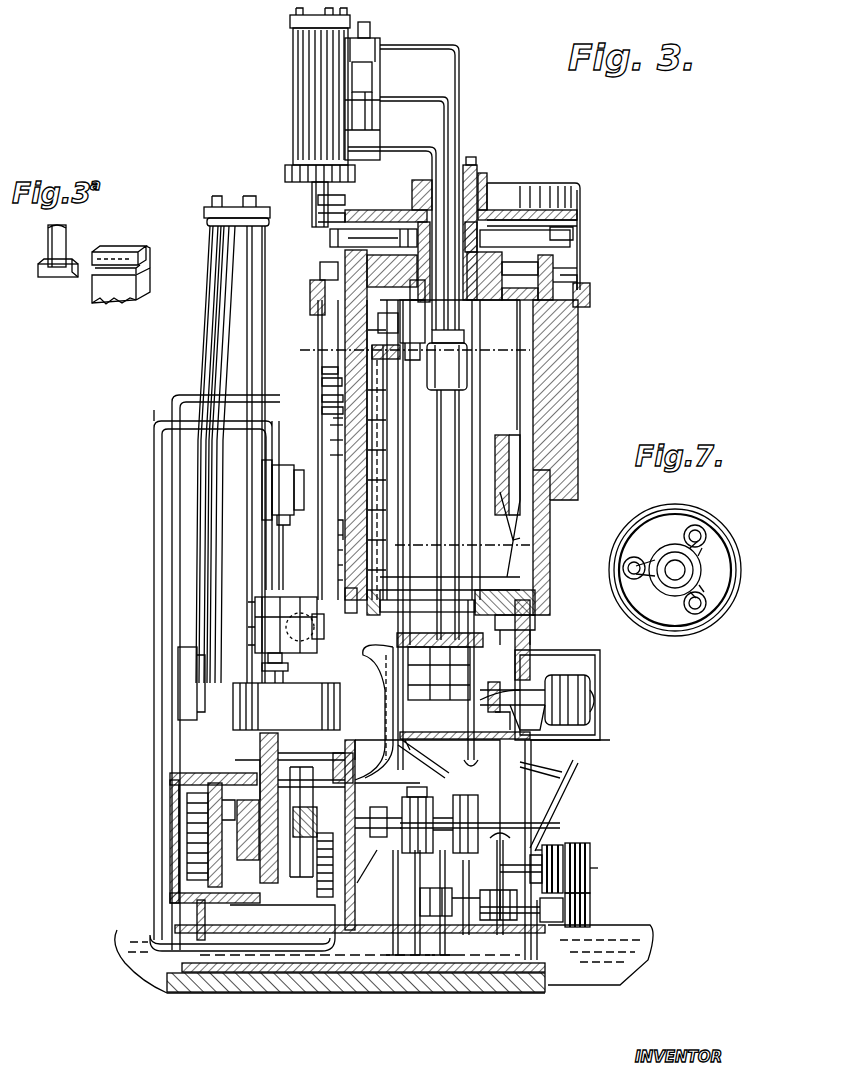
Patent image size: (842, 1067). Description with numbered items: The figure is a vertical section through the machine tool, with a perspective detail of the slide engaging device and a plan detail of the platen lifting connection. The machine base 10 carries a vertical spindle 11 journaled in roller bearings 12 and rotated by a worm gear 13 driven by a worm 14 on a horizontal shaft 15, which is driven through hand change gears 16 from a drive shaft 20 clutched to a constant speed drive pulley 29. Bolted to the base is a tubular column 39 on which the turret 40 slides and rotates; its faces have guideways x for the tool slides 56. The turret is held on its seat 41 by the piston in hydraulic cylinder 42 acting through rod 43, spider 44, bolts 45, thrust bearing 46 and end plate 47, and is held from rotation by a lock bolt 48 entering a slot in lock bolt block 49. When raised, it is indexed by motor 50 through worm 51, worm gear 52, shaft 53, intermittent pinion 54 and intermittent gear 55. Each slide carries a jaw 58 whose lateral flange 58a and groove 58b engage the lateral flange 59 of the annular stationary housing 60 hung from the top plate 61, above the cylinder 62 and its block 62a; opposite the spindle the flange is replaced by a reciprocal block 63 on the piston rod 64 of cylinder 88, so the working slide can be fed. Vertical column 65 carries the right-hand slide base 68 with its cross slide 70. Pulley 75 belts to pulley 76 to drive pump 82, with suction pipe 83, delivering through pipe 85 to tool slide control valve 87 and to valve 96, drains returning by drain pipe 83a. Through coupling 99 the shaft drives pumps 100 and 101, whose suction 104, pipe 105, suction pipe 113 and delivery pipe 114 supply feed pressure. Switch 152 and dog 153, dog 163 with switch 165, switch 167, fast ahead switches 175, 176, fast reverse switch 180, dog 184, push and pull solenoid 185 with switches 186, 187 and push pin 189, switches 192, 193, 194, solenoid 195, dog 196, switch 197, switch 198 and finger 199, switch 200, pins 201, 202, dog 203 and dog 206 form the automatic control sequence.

In FIG. 3, the machine base 10 is at (178, 918).
In FIG. 3, the vertical spindle 11 is at (268, 905).
In FIG. 3, the roller bearings 12 is at (250, 760).
In FIG. 3, the worm gear 13 is at (208, 805).
In FIG. 3, the worm 14 is at (277, 860).
In FIG. 3, the horizontal shaft 15 is at (416, 820).
In FIG. 3, the hand change gears 16 is at (187, 822).
In FIG. 3, the drive shaft 20 is at (570, 843).
In FIG. 3, the constant speed drive pulley 29 is at (590, 860).
In FIG. 3, the tubular column 39 is at (560, 362).
In FIG. 3, the turret 40 is at (560, 420).
In FIG. 3, the seat 41 is at (515, 560).
In FIG. 3, the hydraulic cylinder 42 is at (419, 706).
In FIG. 7, the rod 43 is at (670, 572).
In FIG. 3, the rod 43 is at (455, 430).
In FIG. 7, the spider 44 is at (663, 545).
In FIG. 3, the spider 44 is at (467, 368).
In FIG. 7, the bolts 45 is at (634, 557).
In FIG. 3, the bolts 45 is at (440, 395).
In FIG. 3, the thrust bearing 46 is at (575, 285).
In FIG. 3, the end plate 47 is at (518, 265).
In FIG. 3, the lock bolt 48 is at (555, 480).
In FIG. 3, the lock bolt block 49 is at (509, 460).
In FIG. 3, the motor 50 is at (590, 686).
In FIG. 3, the worm 51 is at (530, 688).
In FIG. 3, the worm gear 52 is at (511, 717).
In FIG. 3, the shaft 53 is at (540, 600).
In FIG. 3, the intermittent pinion 54 is at (530, 590).
In FIG. 3, the intermittent gear 55 is at (540, 620).
In FIG. 3, the tool slides 56 is at (578, 315).
In FIG. 3A, the jaw 58 is at (105, 296).
In FIG. 3, the jaw 58 is at (593, 280).
In FIG. 3A, the lateral flange 58a is at (110, 256).
In FIG. 3, the lateral flange 58a is at (577, 240).
In FIG. 3A, the groove 58b is at (140, 270).
In FIG. 3, the lateral flange 59 is at (568, 278).
In FIG. 3, the annular stationary housing 60 is at (562, 250).
In FIG. 3, the top plate 61 is at (578, 183).
In FIG. 3, the cylinder 62 is at (532, 208).
In FIG. 3, the cylinder block 62a is at (487, 180).
In FIG. 3A, the reciprocal block 63 is at (53, 278).
In FIG. 3, the reciprocal block 63 is at (320, 270).
In FIG. 3A, the piston rod 64 is at (48, 246).
In FIG. 3, the piston rod 64 is at (312, 240).
In FIG. 3, the vertical column 65 is at (255, 595).
In FIG. 3, the right-hand slide base 68 is at (268, 617).
In FIG. 3, the cross slide 70 is at (285, 635).
In FIG. 3, the pulley 75 is at (590, 872).
In FIG. 3, the pulley 76 is at (592, 908).
In FIG. 3, the pump 82 is at (420, 992).
In FIG. 3, the suction pipe 83 is at (388, 992).
In FIG. 3, the drain pipe 83a is at (450, 100).
In FIG. 3, the pipe 85 is at (420, 138).
In FIG. 3, the tool slide control valve 87 is at (362, 80).
In FIG. 3, the cylinder 88 is at (293, 47).
In FIG. 3, the valve 96 is at (310, 960).
In FIG. 3, the coupling 99 is at (333, 835).
In FIG. 3, the pump 100 is at (410, 870).
In FIG. 3, the pump 101 is at (498, 826).
In FIG. 3, the suction 104 is at (462, 992).
In FIG. 3, the pipe 105 is at (425, 40).
In FIG. 3, the suction pipe 113 is at (533, 992).
In FIG. 3, the delivery pipe 114 is at (172, 535).
In FIG. 3, the switch 152 is at (337, 600).
In FIG. 3, the dog 153 is at (338, 565).
In FIG. 3, the dog 163 is at (322, 408).
In FIG. 3, the switch 165 is at (338, 550).
In FIG. 3, the switch 167 is at (338, 580).
In FIG. 3, the fast ahead switch 175 is at (338, 535).
In FIG. 3, the fast ahead switch 176 is at (338, 520).
In FIG. 3, the fast reverse switch 180 is at (262, 672).
In FIG. 3, the dog 184 is at (288, 663).
In FIG. 3, the push and pull solenoid 185 is at (290, 992).
In FIG. 3, the switch 186 is at (330, 456).
In FIG. 3, the switch 187 is at (330, 441).
In FIG. 3, the push pin 189 is at (287, 525).
In FIG. 3, the switch 192 is at (330, 426).
In FIG. 3, the switch 193 is at (322, 397).
In FIG. 3, the switch 194 is at (519, 741).
In FIG. 3, the solenoid 195 is at (283, 678).
In FIG. 3, the dog 196 is at (322, 381).
In FIG. 3, the switch 197 is at (345, 350).
In FIG. 3, the switch 198 is at (366, 197).
In FIG. 3, the finger 199 is at (388, 241).
In FIG. 3, the switch 200 is at (580, 762).
In FIG. 3, the pin 201 is at (598, 652).
In FIG. 3, the pin 202 is at (545, 690).
In FIG. 3, the dog 203 is at (333, 418).
In FIG. 3, the dog 206 is at (322, 369).
In FIG. 3, the guideways x is at (565, 384).